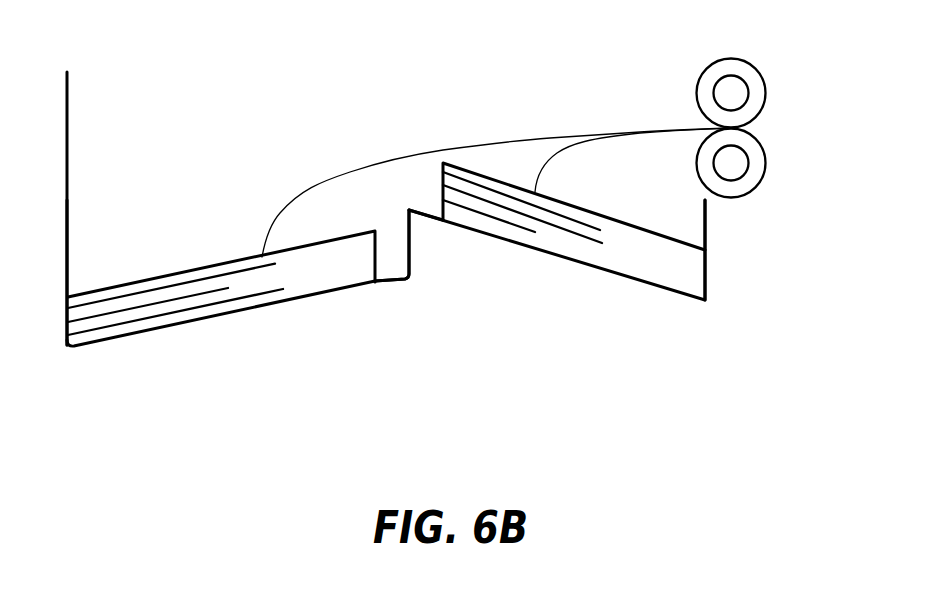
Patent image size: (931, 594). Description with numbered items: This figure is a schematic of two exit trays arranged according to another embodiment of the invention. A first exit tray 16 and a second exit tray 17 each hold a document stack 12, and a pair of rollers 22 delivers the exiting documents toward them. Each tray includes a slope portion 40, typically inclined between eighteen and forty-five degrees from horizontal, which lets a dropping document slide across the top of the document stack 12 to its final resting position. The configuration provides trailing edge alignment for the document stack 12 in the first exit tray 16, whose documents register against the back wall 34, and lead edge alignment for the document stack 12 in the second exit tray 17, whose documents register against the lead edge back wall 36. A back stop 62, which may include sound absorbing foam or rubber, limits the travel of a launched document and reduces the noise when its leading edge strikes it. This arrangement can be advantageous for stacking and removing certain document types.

The document stack 12 is at (213, 265).
The first exit tray 16 is at (598, 268).
The second exit tray 17 is at (295, 303).
The feed rollers 22 is at (764, 97).
The back wall 34 is at (707, 233).
The lead edge back wall 36 is at (68, 248).
The slope portion 40 is at (393, 285).
The back stop 62 is at (68, 118).